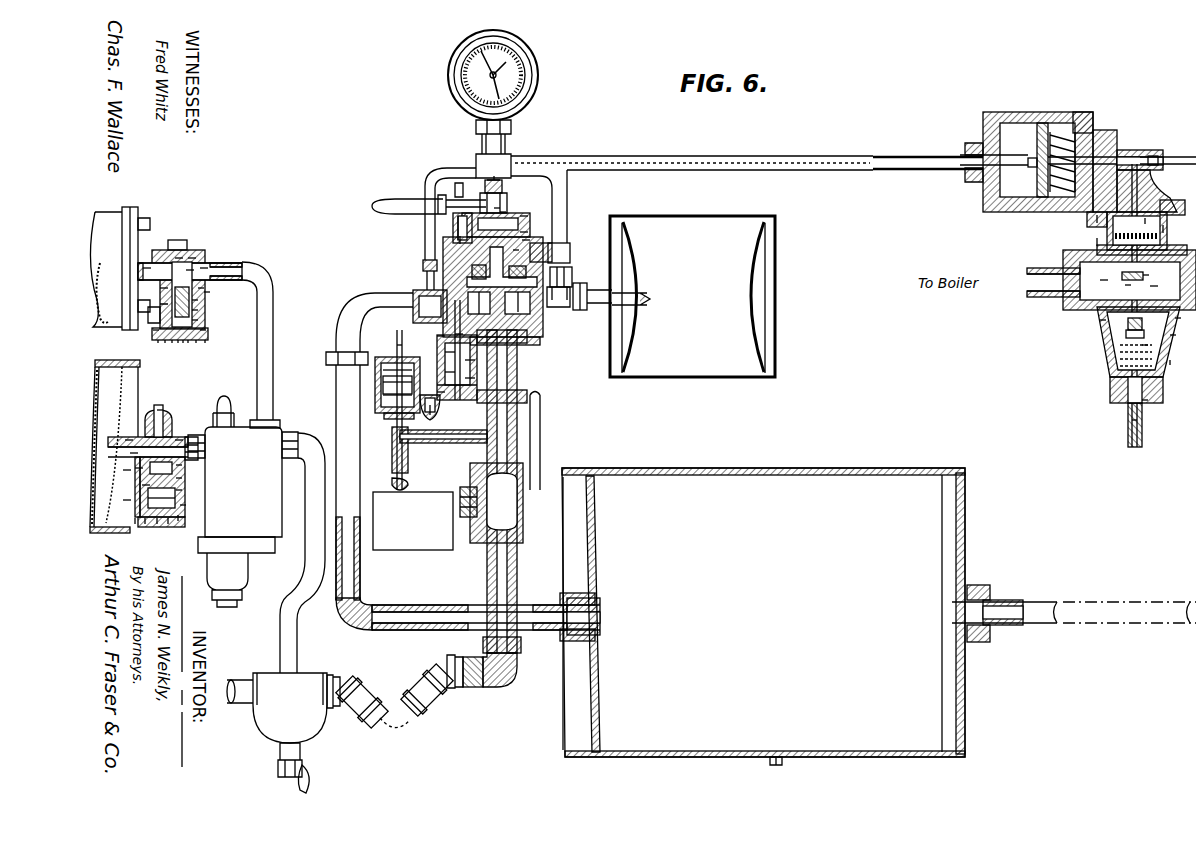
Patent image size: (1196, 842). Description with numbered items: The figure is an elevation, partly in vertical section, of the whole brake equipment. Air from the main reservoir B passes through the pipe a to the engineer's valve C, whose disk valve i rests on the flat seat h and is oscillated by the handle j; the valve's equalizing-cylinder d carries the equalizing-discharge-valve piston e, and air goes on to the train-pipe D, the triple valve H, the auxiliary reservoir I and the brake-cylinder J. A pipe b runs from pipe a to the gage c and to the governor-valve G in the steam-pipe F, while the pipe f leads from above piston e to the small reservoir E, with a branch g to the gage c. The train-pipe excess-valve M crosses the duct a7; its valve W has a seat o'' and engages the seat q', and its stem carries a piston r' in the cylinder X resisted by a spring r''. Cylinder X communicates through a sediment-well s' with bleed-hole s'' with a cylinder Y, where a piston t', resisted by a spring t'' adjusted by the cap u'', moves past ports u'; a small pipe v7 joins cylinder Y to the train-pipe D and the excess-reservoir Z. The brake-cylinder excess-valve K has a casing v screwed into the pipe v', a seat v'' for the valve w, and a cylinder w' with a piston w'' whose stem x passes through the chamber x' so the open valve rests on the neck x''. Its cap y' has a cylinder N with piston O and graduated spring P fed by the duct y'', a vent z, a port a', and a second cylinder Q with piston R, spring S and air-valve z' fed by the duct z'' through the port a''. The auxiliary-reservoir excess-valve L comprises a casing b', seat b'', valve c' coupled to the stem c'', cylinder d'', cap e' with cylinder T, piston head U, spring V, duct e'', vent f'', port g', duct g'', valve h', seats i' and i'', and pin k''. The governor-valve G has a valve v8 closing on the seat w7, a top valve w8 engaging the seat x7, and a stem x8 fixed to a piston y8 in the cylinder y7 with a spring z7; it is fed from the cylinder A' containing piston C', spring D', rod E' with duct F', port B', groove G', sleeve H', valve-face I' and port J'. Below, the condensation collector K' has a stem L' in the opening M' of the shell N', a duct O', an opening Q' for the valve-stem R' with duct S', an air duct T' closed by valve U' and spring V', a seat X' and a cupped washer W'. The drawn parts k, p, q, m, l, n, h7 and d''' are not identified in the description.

The pressure gauge c is at (482, 104).
The pipe b is at (697, 208).
The handle j is at (429, 198).
The valve body C is at (473, 262).
The nut k is at (502, 191).
The valve part p is at (503, 205).
The valve part q is at (511, 209).
The valve part m is at (524, 220).
The stem i is at (447, 228).
The valve part l is at (524, 233).
The valve part n is at (526, 240).
The valve part a7 is at (460, 240).
The cap h7 is at (430, 260).
The valve part h is at (523, 251).
The chamber e is at (483, 304).
The chamber d is at (524, 304).
The connection box i' is at (421, 299).
The pipe a is at (369, 461).
The cylinder Y is at (388, 405).
The piston t'' is at (387, 378).
The piston t' is at (387, 403).
The rod u'' is at (407, 349).
The valve part q' is at (431, 337).
The valve W is at (468, 339).
The pipe v7 is at (443, 444).
The valve X is at (448, 360).
The valve casing M is at (457, 409).
The valve part o'' is at (440, 358).
The valve part s'' is at (439, 375).
The valve part r'' is at (474, 361).
The valve part r' is at (473, 378).
The valve part u' is at (434, 392).
The funnel s' is at (440, 413).
The excess reservoir Z is at (437, 505).
The pipe D is at (433, 530).
The valve H is at (256, 534).
The bracket J is at (106, 269).
The valve K is at (205, 314).
The pipe v' is at (271, 411).
The valve part v'' is at (166, 244).
The valve part w is at (191, 242).
The valve part v is at (202, 255).
The valve part x'' is at (218, 257).
The valve part x' is at (129, 268).
The valve part y'' is at (152, 291).
The valve part y' is at (181, 328).
The valve part x is at (210, 289).
The valve part z'' is at (222, 290).
The valve part w' is at (206, 301).
The valve part w'' is at (214, 311).
The valve part a'' is at (211, 324).
The valve part a' is at (144, 336).
The valve part Q is at (214, 340).
The valve part N is at (149, 350).
The valve part O is at (158, 350).
The valve part P is at (671, 358).
The valve part z is at (173, 350).
The valve part S is at (194, 350).
The valve part R is at (203, 350).
The valve part z' is at (185, 355).
The bracket I is at (118, 446).
The valve L is at (153, 458).
The cap c'' is at (154, 405).
The valve part b'' is at (128, 428).
The valve part b' is at (185, 425).
The valve part c' is at (127, 449).
The valve part k'' is at (112, 475).
The valve part e'' is at (125, 467).
The valve part d'' is at (134, 486).
The valve part d''' is at (113, 508).
The valve part g'' is at (189, 469).
The valve part g' is at (188, 482).
The valve part i'' is at (187, 494).
The valve V is at (199, 506).
The valve part U is at (132, 534).
The valve part f'' is at (146, 534).
The valve part T is at (159, 534).
The valve part e' is at (168, 537).
The valve part h' is at (182, 530).
The coupling g is at (566, 271).
The coupling f is at (579, 289).
The small reservoir E is at (692, 296).
The main reservoir B is at (878, 616).
The cylinder A' is at (1026, 162).
The piston C' is at (1042, 145).
The nut F' is at (1074, 165).
The cylinder head B' is at (1095, 122).
The casing D' is at (1107, 171).
The guide E' is at (1140, 148).
The collar G' is at (1165, 143).
The rod H' is at (1168, 152).
The casing I' is at (1147, 191).
The casing J' is at (1176, 207).
The valve casing G is at (1129, 261).
The box y8 is at (1136, 230).
The valve part y7 is at (1148, 226).
The valve part x8 is at (1097, 218).
The valve part x7 is at (1104, 240).
The valve part z7 is at (1163, 228).
The pipe to boiler F is at (1051, 274).
The disc w8 is at (1125, 272).
The valve part M' is at (1100, 287).
The valve part L' is at (1122, 292).
The valve part v8 is at (1152, 275).
The valve part w7 is at (1163, 285).
The cup K' is at (1126, 342).
The valve part X' is at (1091, 323).
The valve part O' is at (1124, 327).
The valve part U' is at (1141, 328).
The valve part N' is at (1185, 327).
The valve part T' is at (1152, 343).
The valve part V' is at (1177, 344).
The base W' is at (1122, 390).
The rod R' is at (1120, 425).
The rod part S' is at (1143, 428).
The rod part Q' is at (1159, 415).